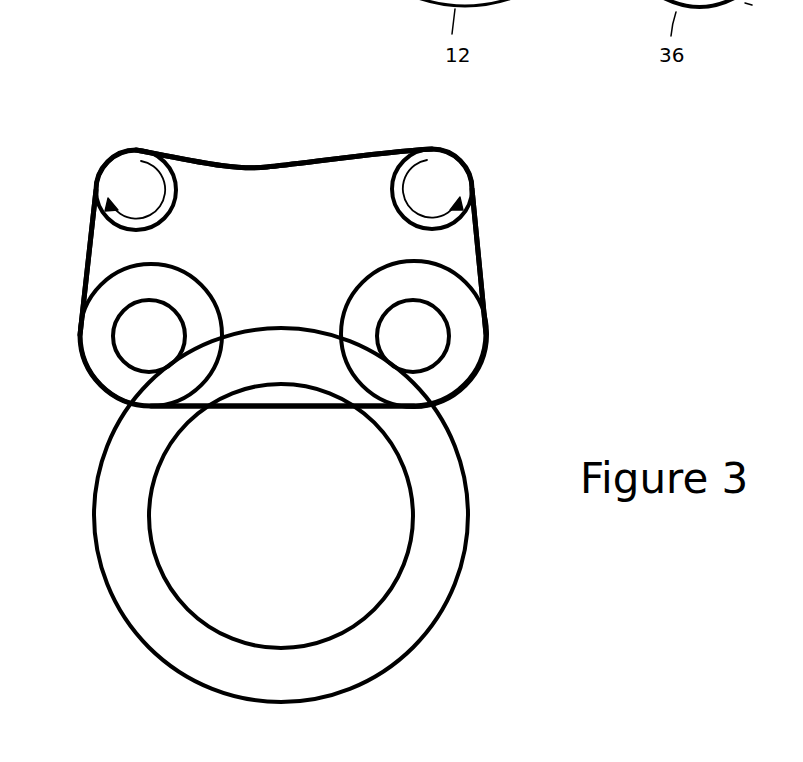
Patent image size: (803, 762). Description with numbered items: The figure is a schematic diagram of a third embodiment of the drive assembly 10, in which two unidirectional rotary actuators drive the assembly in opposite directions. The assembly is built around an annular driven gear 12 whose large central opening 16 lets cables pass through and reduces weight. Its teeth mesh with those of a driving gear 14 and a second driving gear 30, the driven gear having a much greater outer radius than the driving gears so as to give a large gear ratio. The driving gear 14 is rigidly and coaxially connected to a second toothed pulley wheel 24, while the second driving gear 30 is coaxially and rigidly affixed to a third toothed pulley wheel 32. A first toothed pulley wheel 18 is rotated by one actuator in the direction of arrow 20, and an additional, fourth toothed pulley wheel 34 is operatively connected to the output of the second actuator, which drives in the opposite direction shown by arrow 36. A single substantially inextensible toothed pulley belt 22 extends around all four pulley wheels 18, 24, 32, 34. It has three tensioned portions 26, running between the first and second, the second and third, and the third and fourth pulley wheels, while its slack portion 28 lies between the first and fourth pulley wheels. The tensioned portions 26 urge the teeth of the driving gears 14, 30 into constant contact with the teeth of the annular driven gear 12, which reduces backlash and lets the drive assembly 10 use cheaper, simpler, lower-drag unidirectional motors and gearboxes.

The drive assembly 10 is at (148, 80).
The annular driven gear 12 is at (452, 436).
The driving gear 14 is at (390, 310).
The central opening 16 is at (296, 529).
The first toothed pulley wheel 18 is at (458, 174).
The arrow 20 is at (406, 212).
The toothed pulley belt 22 is at (334, 158).
The second toothed pulley wheel 24 is at (343, 318).
The tensioned portion 26 is at (483, 240).
The slack portion 28 is at (253, 160).
The second driving gear 30 is at (175, 308).
The third toothed pulley wheel 32 is at (188, 272).
The fourth toothed pulley wheel 34 is at (117, 163).
The arrow 36 is at (157, 212).